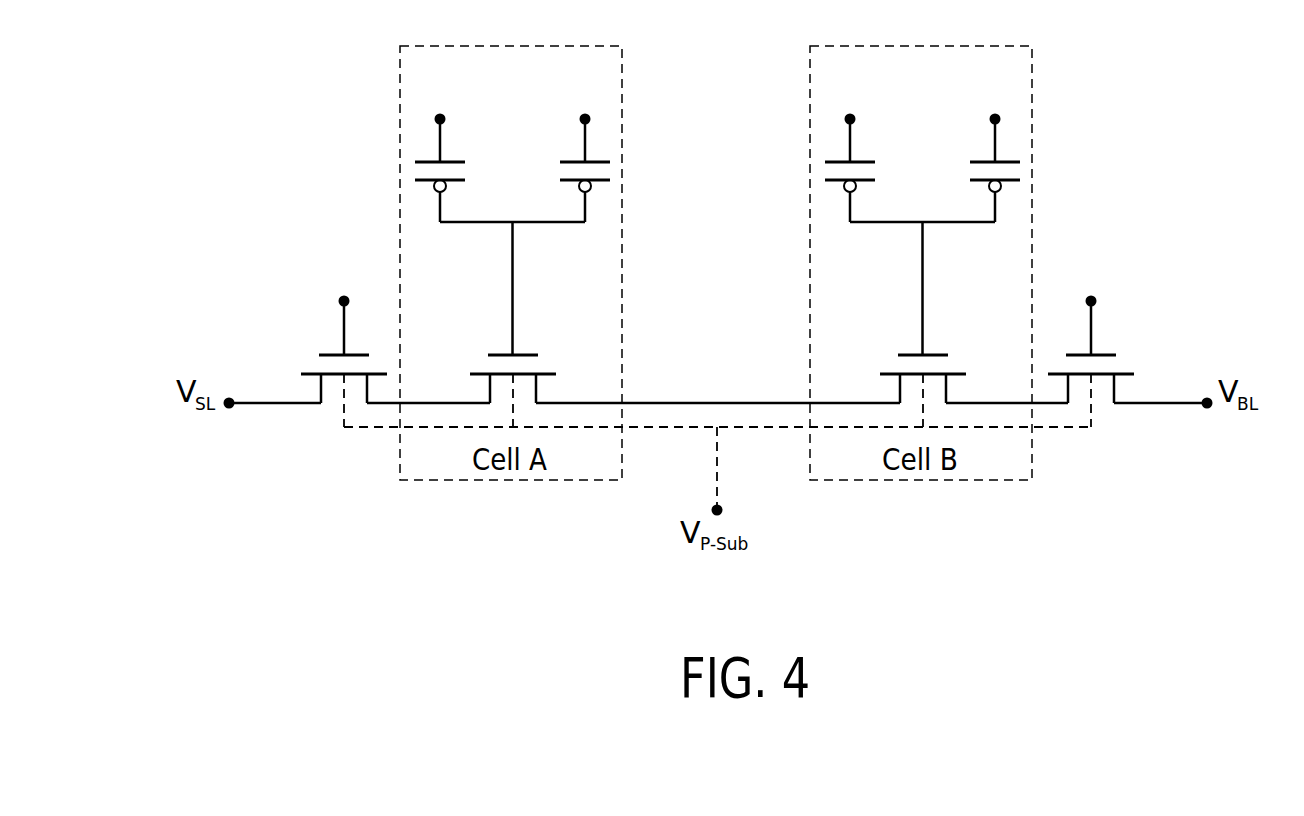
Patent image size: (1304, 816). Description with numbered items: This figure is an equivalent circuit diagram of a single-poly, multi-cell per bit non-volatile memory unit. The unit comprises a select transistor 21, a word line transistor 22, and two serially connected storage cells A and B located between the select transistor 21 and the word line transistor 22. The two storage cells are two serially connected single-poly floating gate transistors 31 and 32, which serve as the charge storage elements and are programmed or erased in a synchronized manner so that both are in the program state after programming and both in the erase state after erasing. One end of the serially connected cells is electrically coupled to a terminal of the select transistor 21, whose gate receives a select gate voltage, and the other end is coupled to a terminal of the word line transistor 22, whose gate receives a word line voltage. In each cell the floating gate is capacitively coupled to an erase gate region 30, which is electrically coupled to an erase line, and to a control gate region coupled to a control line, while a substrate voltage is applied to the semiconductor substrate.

The select transistor 21 is at (326, 353).
The word line transistor 22 is at (1109, 352).
The erase gate region 30 is at (566, 160).
The floating gate transistor 31 is at (497, 353).
The floating gate transistor 32 is at (942, 352).